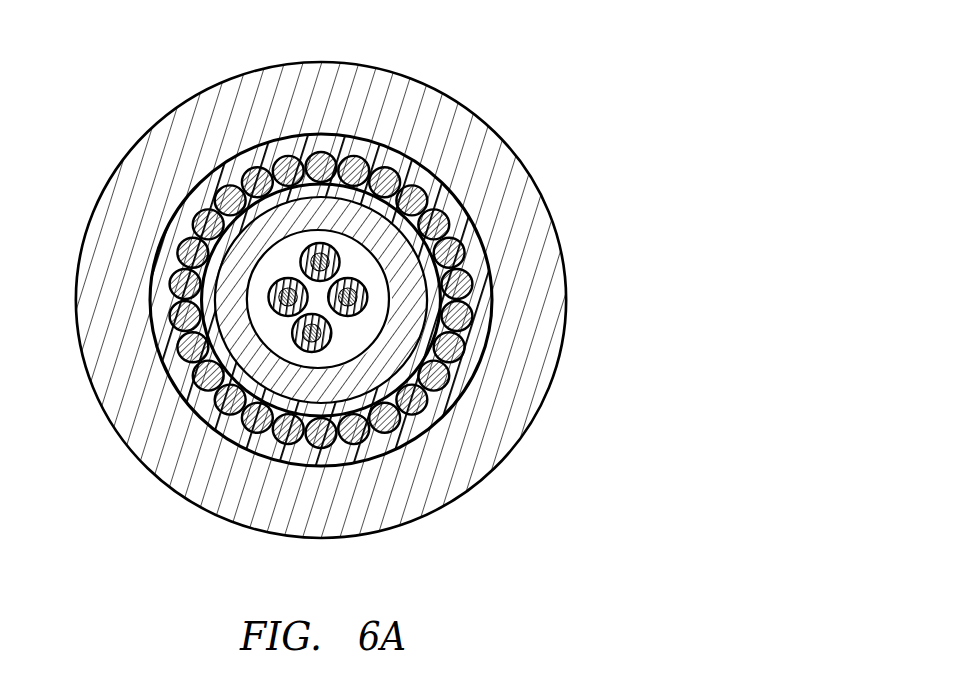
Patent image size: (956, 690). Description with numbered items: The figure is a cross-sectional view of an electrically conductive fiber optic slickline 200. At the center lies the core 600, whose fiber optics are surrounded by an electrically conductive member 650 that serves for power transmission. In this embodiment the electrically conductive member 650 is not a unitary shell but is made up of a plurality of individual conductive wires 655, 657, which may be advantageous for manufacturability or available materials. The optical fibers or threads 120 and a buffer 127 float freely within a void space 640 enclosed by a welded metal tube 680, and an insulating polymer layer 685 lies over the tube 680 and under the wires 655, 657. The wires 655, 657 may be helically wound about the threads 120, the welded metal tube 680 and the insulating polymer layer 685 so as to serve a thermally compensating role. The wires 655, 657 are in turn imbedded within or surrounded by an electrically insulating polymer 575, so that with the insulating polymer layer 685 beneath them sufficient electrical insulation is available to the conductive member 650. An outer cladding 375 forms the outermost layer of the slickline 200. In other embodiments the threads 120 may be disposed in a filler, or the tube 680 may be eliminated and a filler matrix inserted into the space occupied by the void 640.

The electrically conductive fiber optic slickline 200 is at (382, 281).
The outer cladding 375 is at (321, 300).
The individual conductive wire 657 is at (321, 300).
The core 600 is at (321, 300).
The electrically insulating polymer 575 is at (321, 300).
The electrically conductive member 650 is at (321, 300).
The welded metal tube 680 is at (321, 300).
The insulating polymer layer 685 is at (321, 300).
The individual conductive wire 655 is at (321, 300).
The void space 640 is at (321, 300).
The buffer 127 is at (319, 262).
The optical fiber threads 120 is at (347, 297).